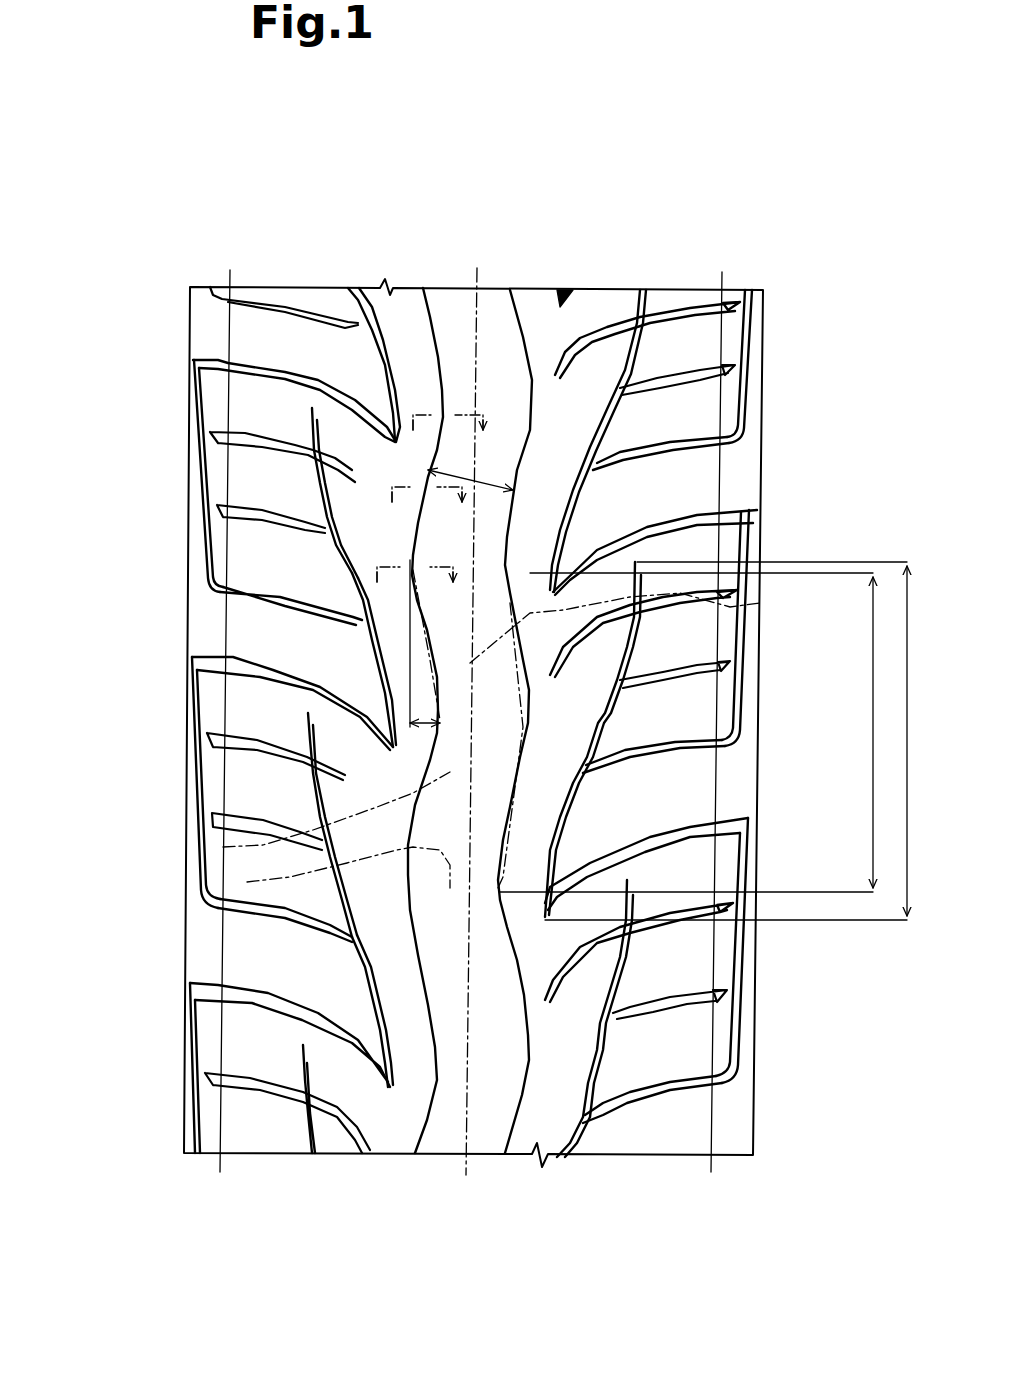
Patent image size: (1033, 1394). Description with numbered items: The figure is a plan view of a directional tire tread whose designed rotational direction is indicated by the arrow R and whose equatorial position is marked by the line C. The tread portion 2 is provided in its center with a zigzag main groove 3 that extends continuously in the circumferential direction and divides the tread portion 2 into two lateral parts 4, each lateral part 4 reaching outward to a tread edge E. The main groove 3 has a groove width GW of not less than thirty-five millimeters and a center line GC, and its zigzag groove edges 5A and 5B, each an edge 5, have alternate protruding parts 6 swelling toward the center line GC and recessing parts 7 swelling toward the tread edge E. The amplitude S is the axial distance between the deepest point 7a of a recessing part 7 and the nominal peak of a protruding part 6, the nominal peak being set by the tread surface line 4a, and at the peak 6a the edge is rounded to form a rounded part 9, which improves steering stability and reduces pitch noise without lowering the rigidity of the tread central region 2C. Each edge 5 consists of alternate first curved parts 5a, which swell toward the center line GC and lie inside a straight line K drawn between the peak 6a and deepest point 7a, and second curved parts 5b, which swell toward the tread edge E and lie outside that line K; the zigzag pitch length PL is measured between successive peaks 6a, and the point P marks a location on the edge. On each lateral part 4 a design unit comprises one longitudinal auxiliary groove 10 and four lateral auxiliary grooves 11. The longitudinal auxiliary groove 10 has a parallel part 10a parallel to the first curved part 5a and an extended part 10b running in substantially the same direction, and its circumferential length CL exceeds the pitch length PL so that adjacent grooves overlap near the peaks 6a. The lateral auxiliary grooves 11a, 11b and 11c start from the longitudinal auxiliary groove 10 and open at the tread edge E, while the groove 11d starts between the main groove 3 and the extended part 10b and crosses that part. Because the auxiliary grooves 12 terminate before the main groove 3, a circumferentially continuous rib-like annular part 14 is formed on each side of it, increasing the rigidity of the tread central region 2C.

The tread portion 2 is at (628, 262).
The tread central region 2C is at (493, 280).
The main groove 3 is at (446, 410).
The lateral part 4 is at (320, 270).
The tread surface line 4a is at (576, 314).
The groove edge 5 is at (463, 687).
The groove edge 5A is at (530, 638).
The groove edge 5B is at (432, 630).
The first curved part 5a is at (433, 670).
The second curved part 5b is at (420, 808).
The protruding part 6 is at (268, 433).
The peak of the protruding part 6a is at (533, 661).
The recessing part 7 is at (407, 883).
The deepest point of the recessing part 7a is at (380, 548).
The rounded part 9 is at (418, 290).
The longitudinal auxiliary groove 10 is at (640, 350).
The parallel part 10a is at (330, 650).
The extended part 10b is at (312, 480).
The lateral auxiliary groove 11 is at (242, 544).
The lateral auxiliary groove 11a is at (410, 723).
The lateral auxiliary groove 11b is at (340, 592).
The lateral auxiliary groove 11c is at (308, 518).
The lateral auxiliary groove 11d is at (433, 402).
The auxiliary grooves 12 is at (655, 1115).
The rib-like annular part 14 is at (410, 1108).
The straight line K is at (223, 847).
The center line of the main groove GC is at (247, 882).
The amplitude S is at (413, 775).
The point P is at (517, 813).
The groove width GW is at (515, 487).
The zigzag pitch length PL is at (688, 732).
The circumferential length CL is at (730, 741).
The tread edge E is at (474, 706).
The tire equator C is at (477, 290).
The arrow indicating rotational direction R is at (881, 432).